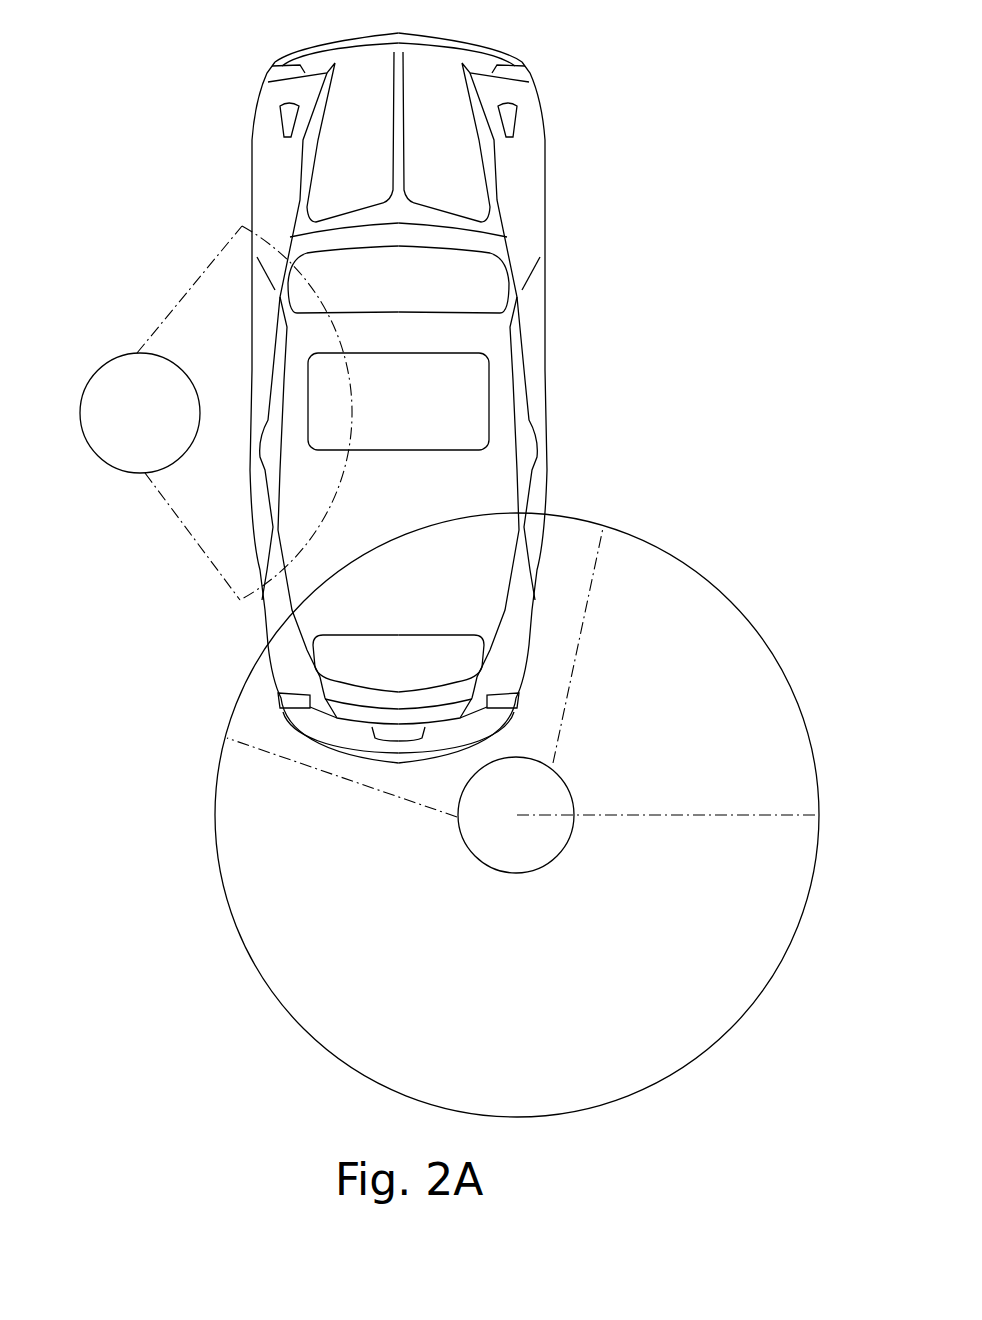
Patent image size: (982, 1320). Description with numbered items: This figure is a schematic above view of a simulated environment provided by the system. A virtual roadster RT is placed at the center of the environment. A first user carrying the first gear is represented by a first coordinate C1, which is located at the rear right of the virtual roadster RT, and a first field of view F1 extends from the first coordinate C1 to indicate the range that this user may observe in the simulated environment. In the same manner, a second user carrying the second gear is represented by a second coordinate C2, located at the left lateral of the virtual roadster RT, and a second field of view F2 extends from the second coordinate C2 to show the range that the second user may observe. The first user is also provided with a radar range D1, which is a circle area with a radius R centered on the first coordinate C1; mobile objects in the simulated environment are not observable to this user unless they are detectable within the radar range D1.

The virtual roadster RT is at (527, 167).
The radar range D1 is at (288, 965).
The first coordinate C1 is at (565, 847).
The radius R is at (707, 817).
The first field of view F1 is at (577, 547).
The second coordinate C2 is at (90, 380).
The second field of view F2 is at (193, 327).